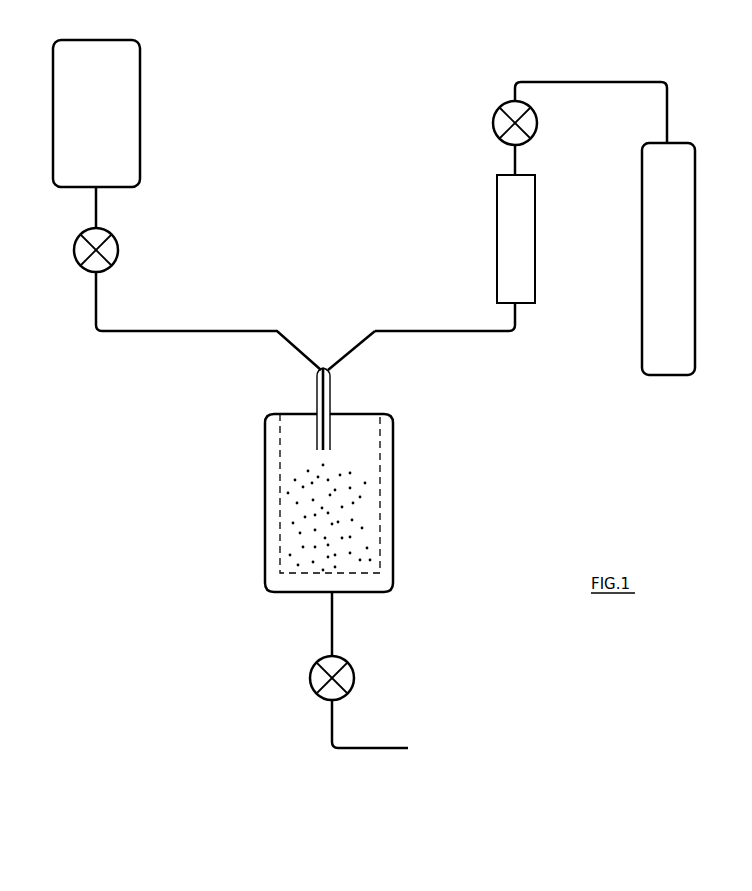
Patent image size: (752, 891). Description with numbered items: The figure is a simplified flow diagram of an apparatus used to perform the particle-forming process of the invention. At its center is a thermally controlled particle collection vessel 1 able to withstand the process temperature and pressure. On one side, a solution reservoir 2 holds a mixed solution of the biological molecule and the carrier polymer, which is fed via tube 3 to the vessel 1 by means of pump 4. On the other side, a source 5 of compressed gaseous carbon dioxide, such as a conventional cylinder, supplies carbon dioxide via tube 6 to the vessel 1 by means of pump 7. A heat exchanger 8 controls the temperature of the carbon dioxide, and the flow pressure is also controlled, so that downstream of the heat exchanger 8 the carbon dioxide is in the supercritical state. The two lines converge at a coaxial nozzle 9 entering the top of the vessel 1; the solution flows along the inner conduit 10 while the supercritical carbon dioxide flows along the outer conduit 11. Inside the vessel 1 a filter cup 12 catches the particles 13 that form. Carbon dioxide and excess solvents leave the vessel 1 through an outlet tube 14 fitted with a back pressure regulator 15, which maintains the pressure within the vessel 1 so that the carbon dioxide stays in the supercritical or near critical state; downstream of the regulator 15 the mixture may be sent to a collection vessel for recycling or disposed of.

The particle collection vessel 1 is at (263, 487).
The solution reservoir 2 is at (140, 130).
The tube 3 is at (95, 303).
The pump 4 is at (117, 252).
The source of compressed gaseous carbon dioxide 5 is at (640, 345).
The tube 6 is at (427, 327).
The pump 7 is at (490, 130).
The heat exchanger 8 is at (495, 252).
The coaxial nozzle 9 is at (345, 391).
The inner conduit 10 is at (321, 390).
The outer conduit 11 is at (317, 406).
The filter cup 12 is at (278, 550).
The particles 13 is at (354, 514).
The outlet tube 14 is at (333, 617).
The back pressure regulator 15 is at (308, 683).